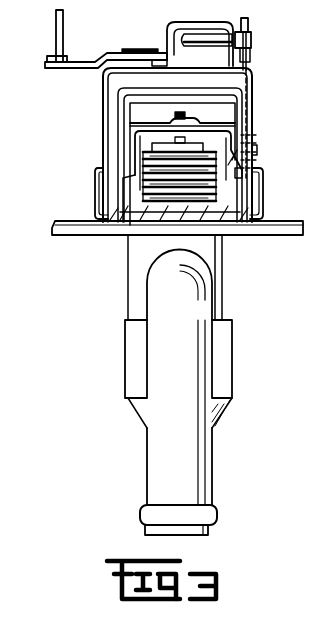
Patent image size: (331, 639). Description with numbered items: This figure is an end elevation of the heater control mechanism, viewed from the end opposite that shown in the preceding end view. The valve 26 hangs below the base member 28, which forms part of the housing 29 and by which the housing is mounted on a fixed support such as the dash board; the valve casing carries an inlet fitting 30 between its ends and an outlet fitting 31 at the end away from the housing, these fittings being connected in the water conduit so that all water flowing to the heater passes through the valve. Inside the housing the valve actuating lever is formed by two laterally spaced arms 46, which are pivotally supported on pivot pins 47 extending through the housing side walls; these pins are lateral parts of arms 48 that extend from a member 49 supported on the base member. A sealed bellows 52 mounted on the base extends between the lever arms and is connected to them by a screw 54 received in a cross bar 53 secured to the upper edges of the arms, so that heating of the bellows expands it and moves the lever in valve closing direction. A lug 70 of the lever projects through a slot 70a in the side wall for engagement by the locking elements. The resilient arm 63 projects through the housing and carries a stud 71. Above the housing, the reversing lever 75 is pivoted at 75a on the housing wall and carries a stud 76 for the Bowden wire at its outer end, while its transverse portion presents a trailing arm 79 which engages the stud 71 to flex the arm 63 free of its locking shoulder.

The valve 26 is at (132, 294).
The base member 28 is at (272, 236).
The housing 29 is at (245, 89).
The inlet fitting 30 is at (153, 451).
The outlet fitting 31 is at (223, 397).
The lever arms 46 is at (135, 144).
The pivot pins 47 is at (255, 166).
The arms 48 is at (263, 186).
The member 49 is at (232, 236).
The sealed bellows 52 is at (135, 215).
The cross bar 53 is at (224, 132).
The screw 54 is at (176, 115).
The arm 63 is at (249, 25).
The lug 70 is at (256, 146).
The slot 70a is at (255, 135).
The stud 71 is at (190, 37).
The lever 75 is at (84, 63).
The pivot 75a is at (128, 49).
The stud 76 is at (64, 19).
The arm of transverse portion 79 is at (251, 55).